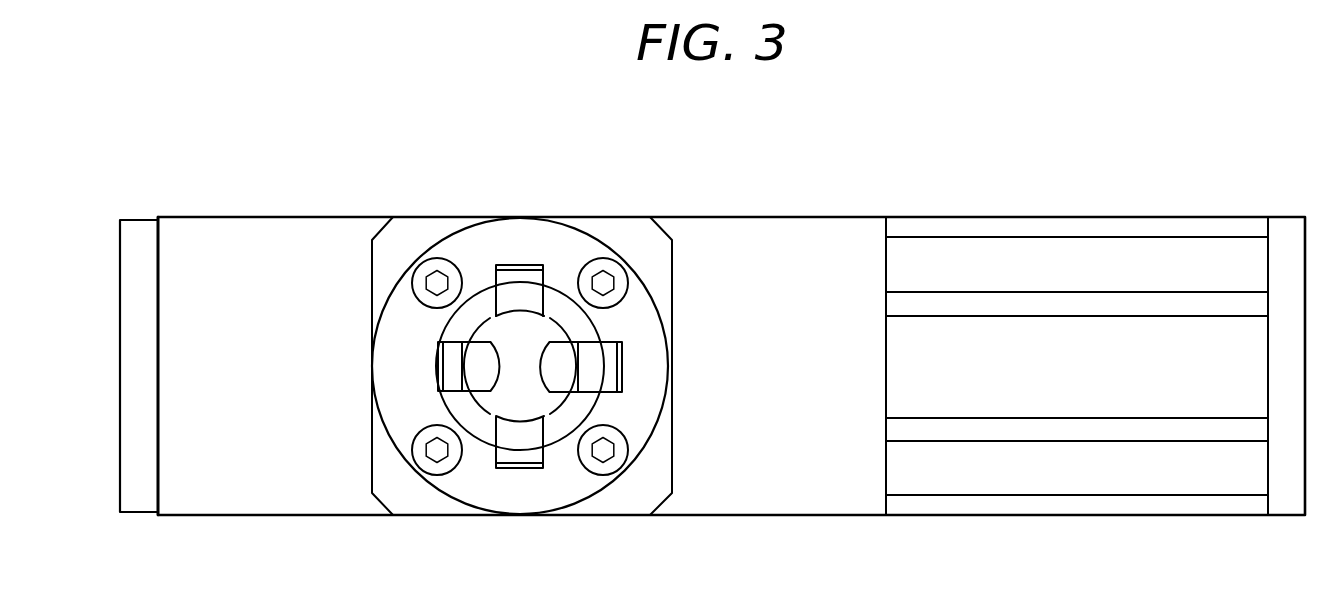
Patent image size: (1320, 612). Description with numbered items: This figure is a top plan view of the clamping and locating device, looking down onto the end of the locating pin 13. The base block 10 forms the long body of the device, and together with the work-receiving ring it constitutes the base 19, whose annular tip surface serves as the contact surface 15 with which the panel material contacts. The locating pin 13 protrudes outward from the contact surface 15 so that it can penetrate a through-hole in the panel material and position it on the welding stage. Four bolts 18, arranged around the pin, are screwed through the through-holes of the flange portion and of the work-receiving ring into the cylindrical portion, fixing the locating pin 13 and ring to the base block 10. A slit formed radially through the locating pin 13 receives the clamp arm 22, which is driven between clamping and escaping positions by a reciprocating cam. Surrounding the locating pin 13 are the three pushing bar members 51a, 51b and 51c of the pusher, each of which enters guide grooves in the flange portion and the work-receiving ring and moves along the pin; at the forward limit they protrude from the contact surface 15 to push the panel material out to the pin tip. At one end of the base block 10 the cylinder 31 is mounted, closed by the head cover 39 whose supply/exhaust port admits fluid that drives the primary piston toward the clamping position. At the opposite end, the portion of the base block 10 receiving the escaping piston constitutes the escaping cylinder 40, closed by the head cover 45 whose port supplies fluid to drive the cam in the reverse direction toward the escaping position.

The base block 10 is at (761, 487).
The locating pin 13 is at (537, 350).
The contact surface 15 is at (490, 487).
The bolts 18 is at (438, 258).
The base 19 is at (808, 180).
The clamp arm 22 is at (468, 360).
The cylinder 31 is at (1065, 252).
The head cover 39 is at (1286, 222).
The escaping cylinder 40 is at (249, 232).
The head cover 45 is at (138, 218).
The pushing bar member 51a is at (613, 367).
The pushing bar member 51b is at (520, 290).
The pushing bar member 51c is at (523, 440).